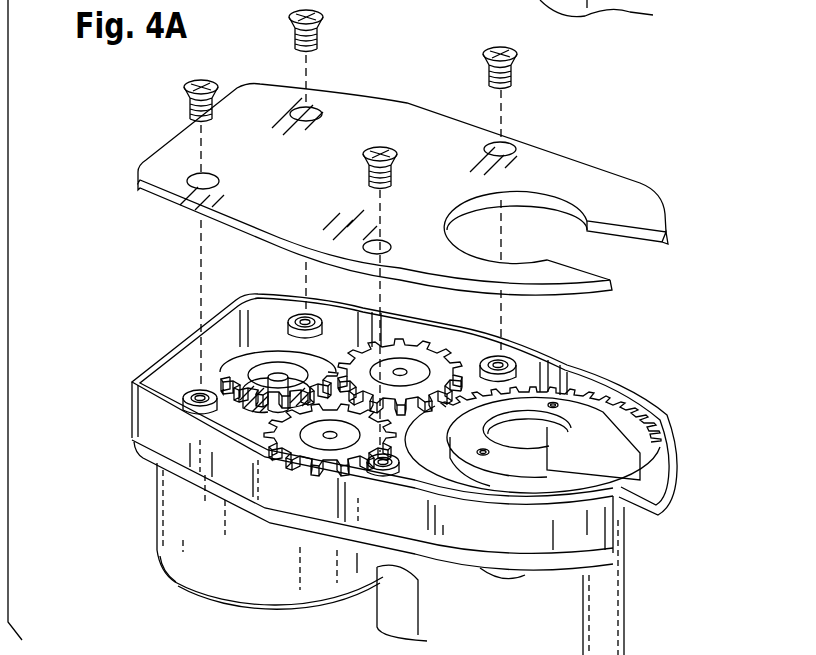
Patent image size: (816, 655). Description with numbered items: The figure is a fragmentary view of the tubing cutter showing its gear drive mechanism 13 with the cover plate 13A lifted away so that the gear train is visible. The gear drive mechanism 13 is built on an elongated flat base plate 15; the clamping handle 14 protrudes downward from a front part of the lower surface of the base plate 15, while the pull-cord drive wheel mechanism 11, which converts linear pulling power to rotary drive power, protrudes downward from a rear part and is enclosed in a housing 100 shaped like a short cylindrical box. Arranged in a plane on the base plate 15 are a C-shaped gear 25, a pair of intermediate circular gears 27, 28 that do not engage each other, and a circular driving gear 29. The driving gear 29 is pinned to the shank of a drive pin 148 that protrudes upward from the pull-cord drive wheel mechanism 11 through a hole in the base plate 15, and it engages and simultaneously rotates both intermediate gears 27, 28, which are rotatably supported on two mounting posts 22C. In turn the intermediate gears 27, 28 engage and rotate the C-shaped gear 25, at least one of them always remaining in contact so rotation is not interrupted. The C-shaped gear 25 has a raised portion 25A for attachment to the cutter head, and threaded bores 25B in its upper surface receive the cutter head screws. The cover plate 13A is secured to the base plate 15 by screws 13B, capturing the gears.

The pull-cord drive wheel mechanism 11 is at (169, 579).
The gear drive mechanism 13 is at (126, 373).
The cover plate 13A is at (590, 185).
The screws 13B is at (395, 172).
The clamping handle 14 is at (636, 579).
The base plate 15 is at (138, 458).
The mounting posts 22C is at (236, 362).
The C-shaped gear 25 is at (608, 402).
The raised portion 25A is at (523, 400).
The threaded bores 25B is at (556, 403).
The intermediate circular gear 27 is at (313, 463).
The intermediate circular gear 28 is at (433, 353).
The circular driving gear 29 is at (268, 400).
The housing 100 is at (157, 535).
The drive pin 148 is at (280, 382).